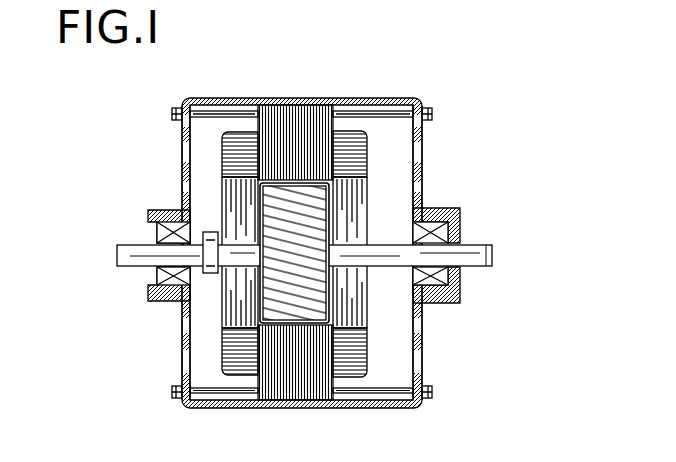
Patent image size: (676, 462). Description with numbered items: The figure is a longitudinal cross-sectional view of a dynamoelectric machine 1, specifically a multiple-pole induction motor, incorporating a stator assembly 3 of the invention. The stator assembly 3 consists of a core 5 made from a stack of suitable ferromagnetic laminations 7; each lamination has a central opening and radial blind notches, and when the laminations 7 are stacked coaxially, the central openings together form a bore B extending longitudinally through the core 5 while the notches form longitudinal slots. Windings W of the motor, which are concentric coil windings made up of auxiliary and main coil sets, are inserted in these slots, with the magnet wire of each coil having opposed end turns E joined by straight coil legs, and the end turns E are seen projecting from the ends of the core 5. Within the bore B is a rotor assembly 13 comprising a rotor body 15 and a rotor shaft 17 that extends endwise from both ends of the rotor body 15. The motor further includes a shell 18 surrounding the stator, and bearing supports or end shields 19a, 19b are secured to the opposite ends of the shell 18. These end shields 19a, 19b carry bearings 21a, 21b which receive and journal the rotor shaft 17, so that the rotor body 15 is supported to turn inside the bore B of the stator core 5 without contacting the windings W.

The dynamoelectric machine 1 is at (498, 70).
The stator assembly 3 is at (298, 128).
The core 5 is at (334, 128).
The ferromagnetic laminations 7 is at (340, 382).
The rotor assembly 13 is at (250, 297).
The rotor body 15 is at (290, 234).
The rotor shaft 17 is at (482, 269).
The shell 18 is at (397, 409).
The end shield 19a is at (181, 177).
The end shield 19b is at (423, 178).
The bearing 21a is at (162, 232).
The bearing 21b is at (445, 232).
The bore B is at (300, 183).
The end turns E is at (372, 347).
The windings W is at (370, 132).